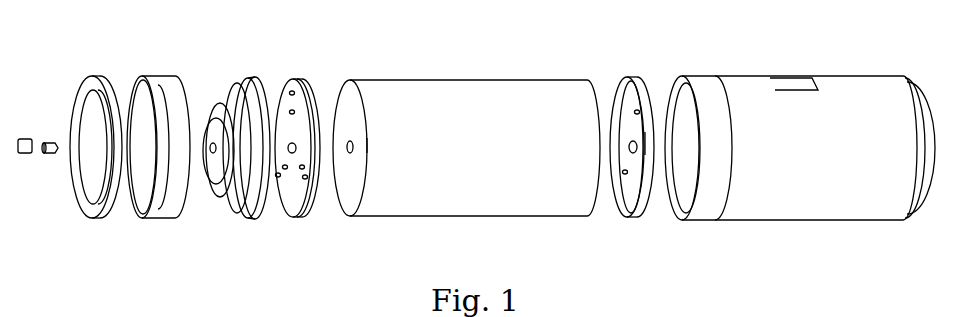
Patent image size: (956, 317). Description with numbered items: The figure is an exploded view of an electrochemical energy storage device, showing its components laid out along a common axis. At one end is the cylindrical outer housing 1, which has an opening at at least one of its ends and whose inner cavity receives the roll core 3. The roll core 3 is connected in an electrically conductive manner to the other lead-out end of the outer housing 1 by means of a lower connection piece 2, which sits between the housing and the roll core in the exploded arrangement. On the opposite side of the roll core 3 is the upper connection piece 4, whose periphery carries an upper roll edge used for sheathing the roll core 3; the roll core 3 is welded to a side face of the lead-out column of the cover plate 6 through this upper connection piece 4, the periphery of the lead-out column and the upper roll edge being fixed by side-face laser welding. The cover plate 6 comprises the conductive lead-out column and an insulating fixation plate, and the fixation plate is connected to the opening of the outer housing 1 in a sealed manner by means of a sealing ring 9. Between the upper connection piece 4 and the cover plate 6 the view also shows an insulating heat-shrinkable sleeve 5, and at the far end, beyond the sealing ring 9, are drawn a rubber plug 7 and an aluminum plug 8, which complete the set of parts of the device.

The outer housing 1 is at (742, 75).
The lower connection piece 2 is at (633, 77).
The roll core 3 is at (462, 79).
The upper connection piece 4 is at (300, 78).
The insulating heat-shrinkable sleeve 5 is at (153, 75).
The cover plate 6 is at (238, 77).
The rubber plug 7 is at (48, 142).
The aluminum plug 8 is at (22, 139).
The sealing ring 9 is at (93, 77).